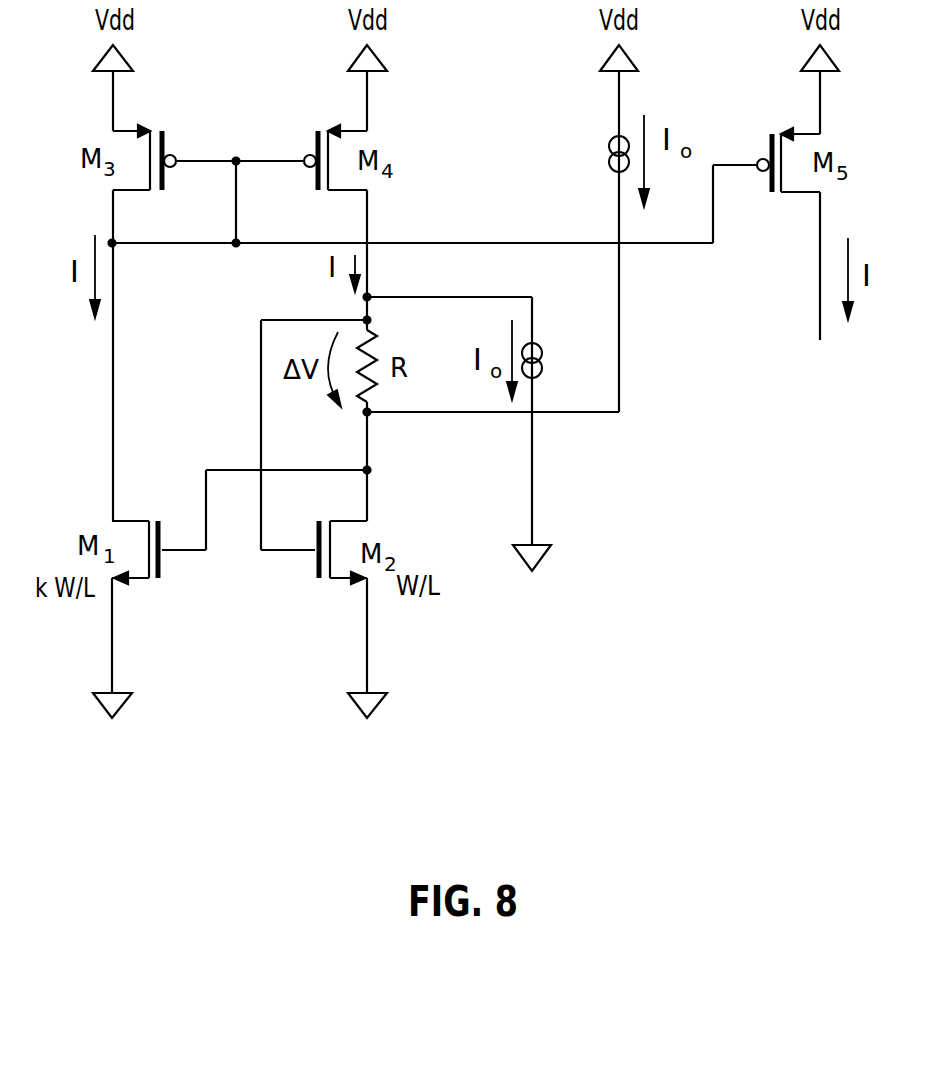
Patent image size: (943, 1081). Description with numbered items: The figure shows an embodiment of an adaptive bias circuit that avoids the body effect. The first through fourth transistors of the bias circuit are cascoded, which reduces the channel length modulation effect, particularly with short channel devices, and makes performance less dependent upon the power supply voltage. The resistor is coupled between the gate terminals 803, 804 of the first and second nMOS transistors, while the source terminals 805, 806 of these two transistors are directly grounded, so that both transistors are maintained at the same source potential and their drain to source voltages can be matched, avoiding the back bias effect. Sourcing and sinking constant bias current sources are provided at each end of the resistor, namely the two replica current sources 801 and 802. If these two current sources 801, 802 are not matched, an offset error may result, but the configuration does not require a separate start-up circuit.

The constant bias current source 801 is at (545, 346).
The constant bias current source 802 is at (610, 140).
The gate terminal 803 is at (293, 553).
The gate terminal 804 is at (193, 553).
The source terminal 805 is at (132, 582).
The source terminal 806 is at (345, 582).